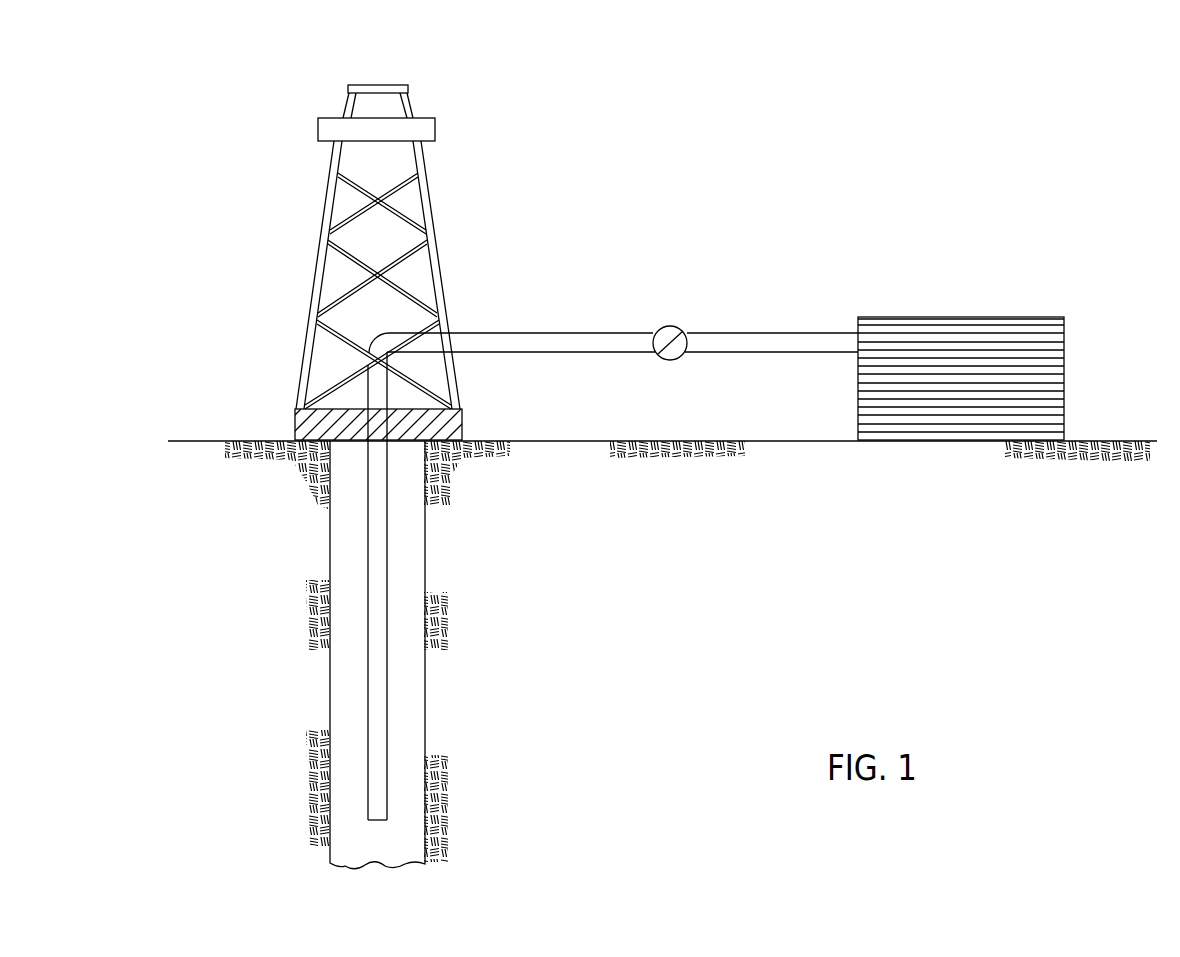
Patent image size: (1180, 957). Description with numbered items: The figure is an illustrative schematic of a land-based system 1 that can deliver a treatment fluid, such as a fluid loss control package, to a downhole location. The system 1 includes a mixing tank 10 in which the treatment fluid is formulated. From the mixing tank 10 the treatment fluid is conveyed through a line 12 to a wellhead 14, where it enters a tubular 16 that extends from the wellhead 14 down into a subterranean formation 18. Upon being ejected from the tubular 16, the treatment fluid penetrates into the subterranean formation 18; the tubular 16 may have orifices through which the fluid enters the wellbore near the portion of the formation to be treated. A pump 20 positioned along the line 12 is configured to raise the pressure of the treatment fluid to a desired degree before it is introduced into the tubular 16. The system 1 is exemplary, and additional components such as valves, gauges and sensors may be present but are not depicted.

The system 1 is at (230, 221).
The mixing tank 10 is at (971, 317).
The line 12 is at (519, 333).
The wellhead 14 is at (295, 412).
The tubular 16 is at (388, 546).
The subterranean formation 18 is at (212, 653).
The pump 20 is at (667, 327).